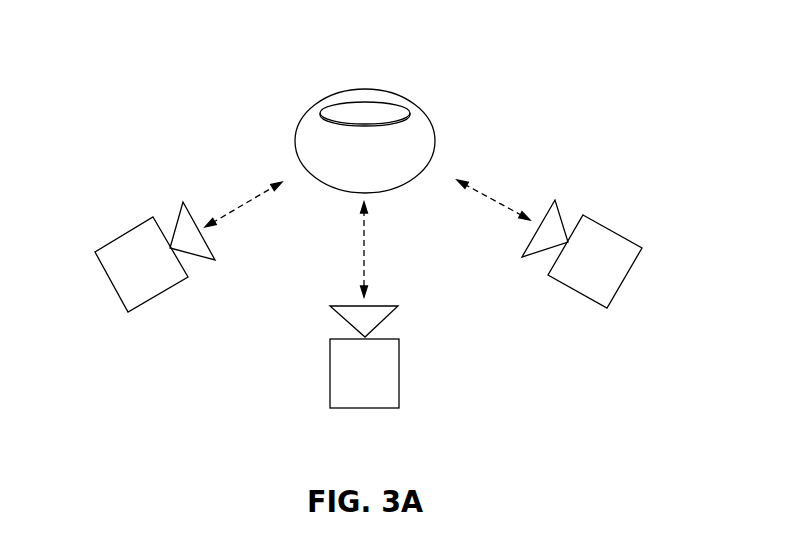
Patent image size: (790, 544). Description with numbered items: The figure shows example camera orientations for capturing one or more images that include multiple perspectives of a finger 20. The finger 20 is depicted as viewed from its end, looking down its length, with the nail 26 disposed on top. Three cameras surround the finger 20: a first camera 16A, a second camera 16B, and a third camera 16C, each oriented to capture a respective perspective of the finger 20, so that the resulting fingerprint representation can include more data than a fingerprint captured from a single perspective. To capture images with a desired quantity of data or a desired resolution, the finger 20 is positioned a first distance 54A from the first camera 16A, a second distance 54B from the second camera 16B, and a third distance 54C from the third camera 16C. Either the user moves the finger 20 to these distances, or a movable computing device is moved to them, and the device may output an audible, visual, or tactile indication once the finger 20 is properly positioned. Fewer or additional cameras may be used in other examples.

The finger 20 is at (428, 58).
The nail 26 is at (351, 115).
The first camera 16A is at (122, 230).
The second camera 16B is at (400, 377).
The third camera 16C is at (620, 230).
The first distance 54A is at (250, 182).
The second distance 54B is at (394, 243).
The third distance 54C is at (510, 170).